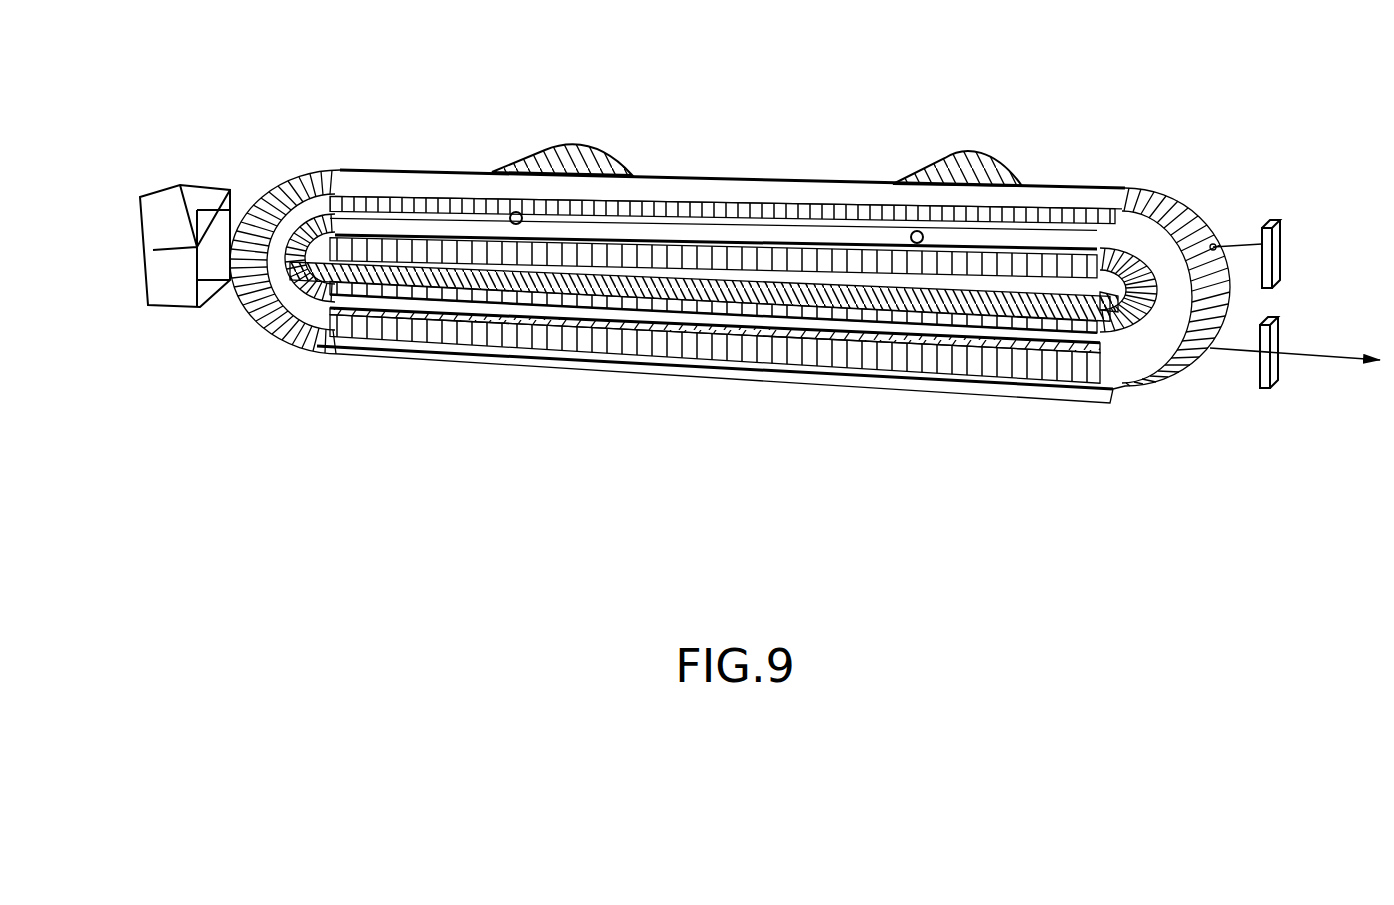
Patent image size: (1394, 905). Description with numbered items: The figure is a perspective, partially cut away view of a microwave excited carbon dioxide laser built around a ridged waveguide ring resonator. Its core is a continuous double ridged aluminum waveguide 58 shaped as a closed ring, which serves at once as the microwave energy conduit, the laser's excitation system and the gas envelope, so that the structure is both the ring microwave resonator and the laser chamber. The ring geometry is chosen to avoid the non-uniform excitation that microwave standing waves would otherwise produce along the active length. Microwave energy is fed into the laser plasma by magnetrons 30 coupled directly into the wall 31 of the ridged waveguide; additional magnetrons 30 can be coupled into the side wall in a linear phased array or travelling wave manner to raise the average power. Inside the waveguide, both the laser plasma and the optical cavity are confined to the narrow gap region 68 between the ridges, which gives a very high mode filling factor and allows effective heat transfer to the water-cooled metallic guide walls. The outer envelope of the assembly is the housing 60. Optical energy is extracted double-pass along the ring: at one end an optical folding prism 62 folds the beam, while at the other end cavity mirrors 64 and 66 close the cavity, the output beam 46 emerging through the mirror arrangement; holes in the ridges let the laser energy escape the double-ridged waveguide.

The magnetron 30 is at (563, 130).
The wall of the ridged waveguide structure 31 is at (526, 218).
The output beam 46 is at (1313, 360).
The continuous double ridged aluminum waveguide 58 is at (413, 282).
The housing 60 is at (313, 343).
The optical folding prism 62 is at (205, 182).
The cavity mirror 64 is at (1275, 196).
The cavity mirror 66 is at (1257, 396).
The narrow gap region 68 is at (937, 330).